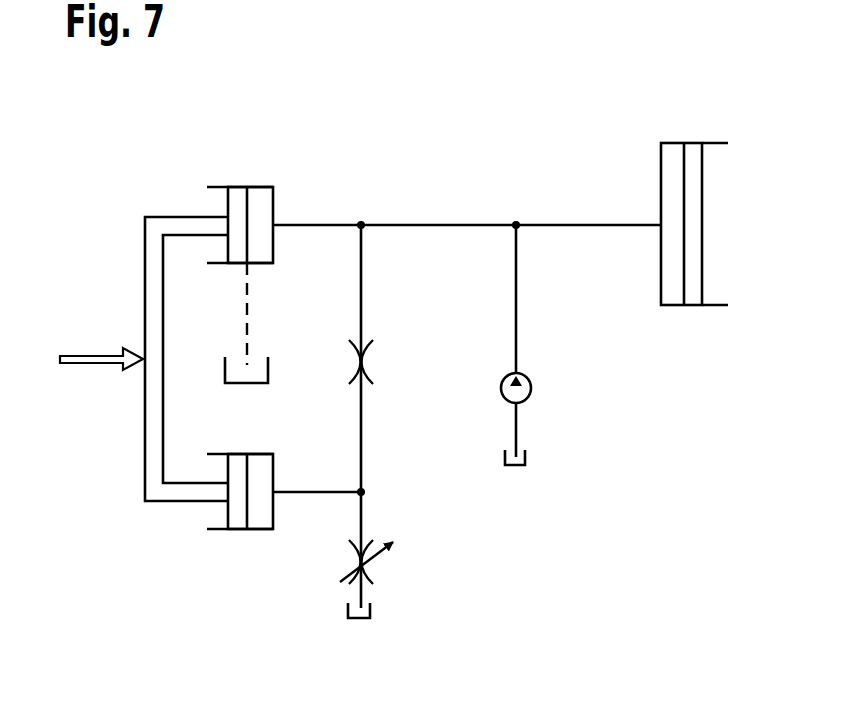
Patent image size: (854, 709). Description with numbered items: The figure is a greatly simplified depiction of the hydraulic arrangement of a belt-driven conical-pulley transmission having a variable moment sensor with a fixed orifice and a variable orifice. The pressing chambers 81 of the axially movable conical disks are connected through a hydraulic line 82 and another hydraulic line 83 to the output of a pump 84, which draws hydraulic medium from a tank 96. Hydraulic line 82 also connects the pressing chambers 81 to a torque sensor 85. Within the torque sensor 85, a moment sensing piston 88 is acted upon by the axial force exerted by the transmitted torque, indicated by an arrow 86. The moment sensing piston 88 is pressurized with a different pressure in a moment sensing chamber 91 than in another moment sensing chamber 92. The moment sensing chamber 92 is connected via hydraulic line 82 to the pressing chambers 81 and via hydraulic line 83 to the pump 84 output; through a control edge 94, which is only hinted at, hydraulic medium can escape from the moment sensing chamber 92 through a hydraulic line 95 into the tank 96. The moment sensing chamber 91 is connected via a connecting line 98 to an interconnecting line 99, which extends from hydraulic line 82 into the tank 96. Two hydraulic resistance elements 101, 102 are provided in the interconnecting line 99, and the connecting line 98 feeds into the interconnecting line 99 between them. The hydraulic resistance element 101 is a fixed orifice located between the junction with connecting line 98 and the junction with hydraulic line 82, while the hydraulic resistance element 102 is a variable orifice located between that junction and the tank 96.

The pressing chambers 81 is at (681, 138).
The hydraulic line 82 is at (468, 224).
The hydraulic line 83 is at (518, 312).
The pump 84 is at (532, 390).
The torque sensor 85 is at (194, 168).
The arrow 86 is at (92, 355).
The moment sensing piston 88 is at (143, 246).
The moment sensing chamber 91 is at (260, 516).
The moment sensing chamber 92 is at (260, 203).
The control edge 94 is at (245, 268).
The hydraulic line 95 is at (251, 302).
The tank 96 is at (257, 367).
The connecting line 98 is at (310, 495).
The interconnecting line 99 is at (362, 448).
The hydraulic resistance element 101 is at (366, 350).
The hydraulic resistance element 102 is at (368, 566).